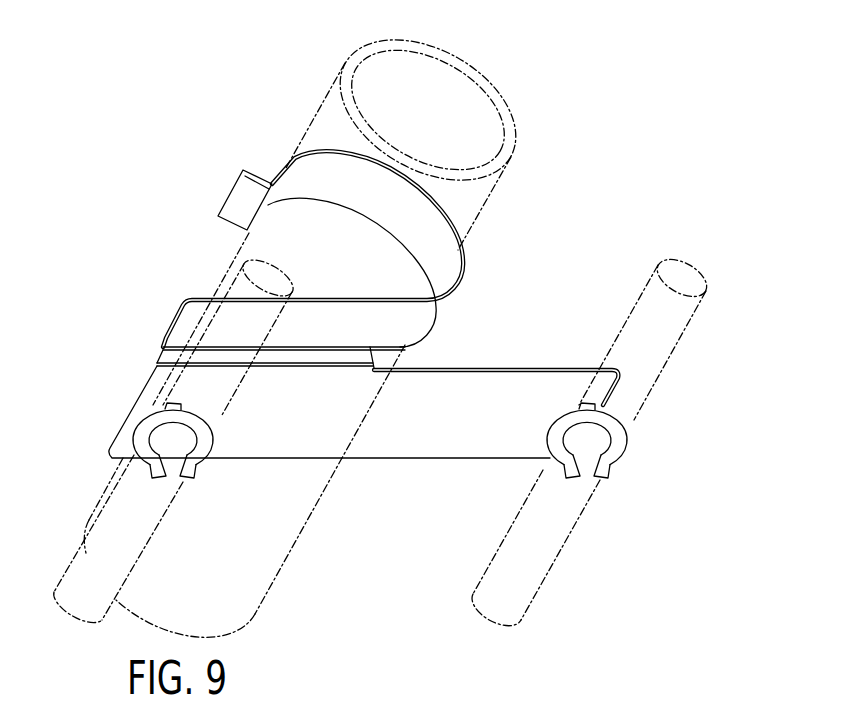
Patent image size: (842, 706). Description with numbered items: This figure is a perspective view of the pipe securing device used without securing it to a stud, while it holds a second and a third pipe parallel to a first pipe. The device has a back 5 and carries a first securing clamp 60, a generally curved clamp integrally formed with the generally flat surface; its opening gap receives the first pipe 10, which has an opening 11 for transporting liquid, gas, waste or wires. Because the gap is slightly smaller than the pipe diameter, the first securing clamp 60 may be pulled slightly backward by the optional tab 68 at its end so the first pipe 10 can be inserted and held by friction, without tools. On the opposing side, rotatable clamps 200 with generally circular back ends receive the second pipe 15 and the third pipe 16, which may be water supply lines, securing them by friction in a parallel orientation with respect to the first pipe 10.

The back 5 is at (528, 378).
The first pipe 10 is at (484, 200).
The opening 11 is at (460, 93).
The second pipe 15 is at (143, 537).
The third pipe 16 is at (543, 553).
The first securing clamp 60 is at (423, 320).
The tab 68 is at (248, 191).
The rotatable clamps 200 is at (140, 447).